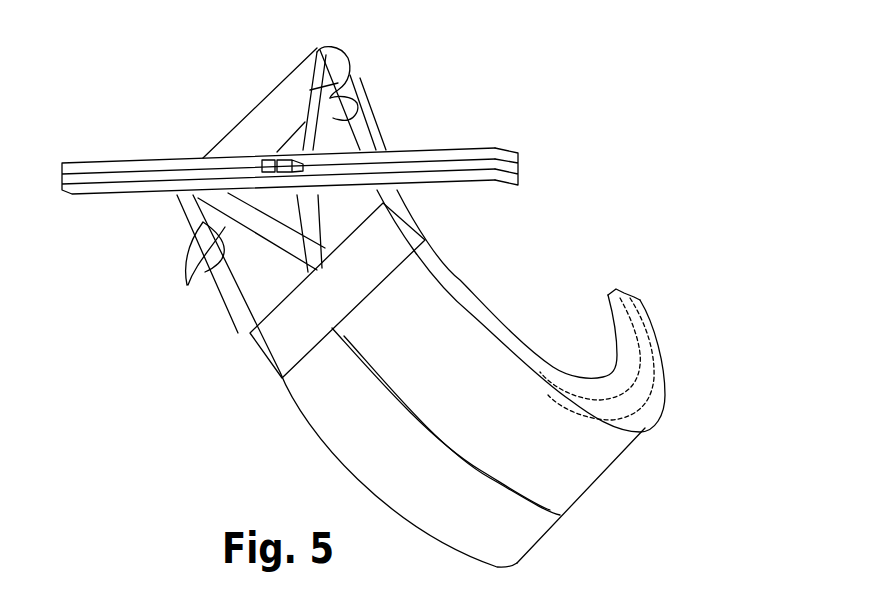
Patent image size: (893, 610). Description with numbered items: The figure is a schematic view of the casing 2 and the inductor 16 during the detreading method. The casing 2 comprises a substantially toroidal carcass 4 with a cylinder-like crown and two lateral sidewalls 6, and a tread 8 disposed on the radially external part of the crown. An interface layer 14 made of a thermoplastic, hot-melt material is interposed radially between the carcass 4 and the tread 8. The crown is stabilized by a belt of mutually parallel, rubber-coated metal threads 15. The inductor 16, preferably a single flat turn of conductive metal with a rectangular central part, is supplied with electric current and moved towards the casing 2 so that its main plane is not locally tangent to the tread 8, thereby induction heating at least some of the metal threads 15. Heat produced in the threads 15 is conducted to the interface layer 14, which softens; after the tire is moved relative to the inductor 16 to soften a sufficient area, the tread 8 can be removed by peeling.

The casing 2 is at (628, 234).
The carcass 4 is at (645, 340).
The lateral sidewalls 6 is at (614, 378).
The tread 8 is at (596, 452).
The interface layer 14 is at (290, 337).
The metal threads 15 is at (343, 112).
The inductor 16 is at (503, 135).